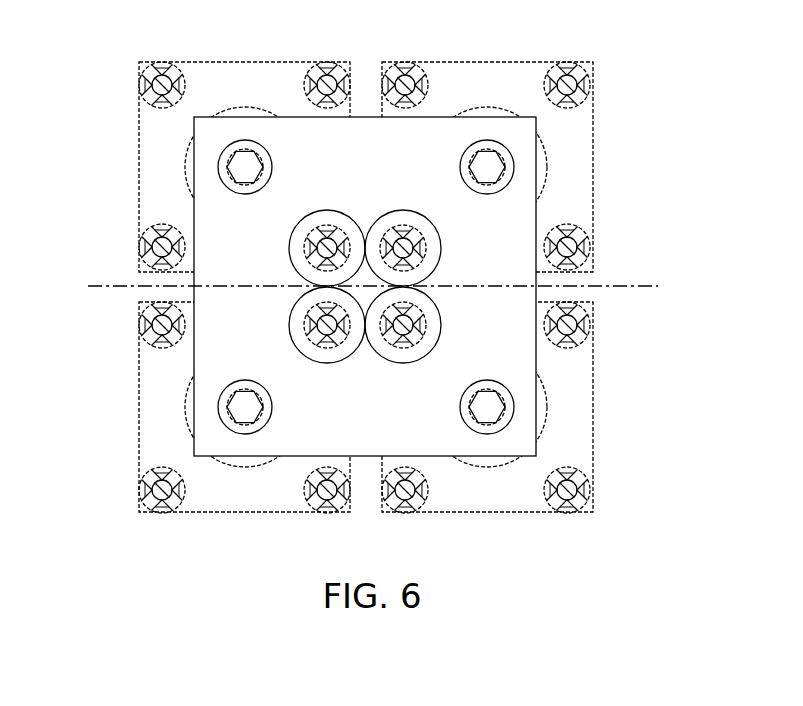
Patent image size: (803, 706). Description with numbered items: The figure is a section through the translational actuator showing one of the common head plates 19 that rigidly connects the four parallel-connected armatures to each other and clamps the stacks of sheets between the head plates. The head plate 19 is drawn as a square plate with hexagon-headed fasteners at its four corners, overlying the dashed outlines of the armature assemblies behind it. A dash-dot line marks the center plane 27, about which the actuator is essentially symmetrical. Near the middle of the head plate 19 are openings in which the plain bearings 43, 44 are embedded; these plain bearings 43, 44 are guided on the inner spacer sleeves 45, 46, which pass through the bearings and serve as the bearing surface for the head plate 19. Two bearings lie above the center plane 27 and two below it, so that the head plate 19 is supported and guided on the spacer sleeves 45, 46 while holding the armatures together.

The head plate 19 is at (437, 158).
The vertical center plane 27 is at (393, 287).
The plain bearing 43 is at (298, 228).
The plain bearing 44 is at (425, 224).
The inner spacer sleeve 45 is at (307, 250).
The inner spacer sleeve 46 is at (428, 256).